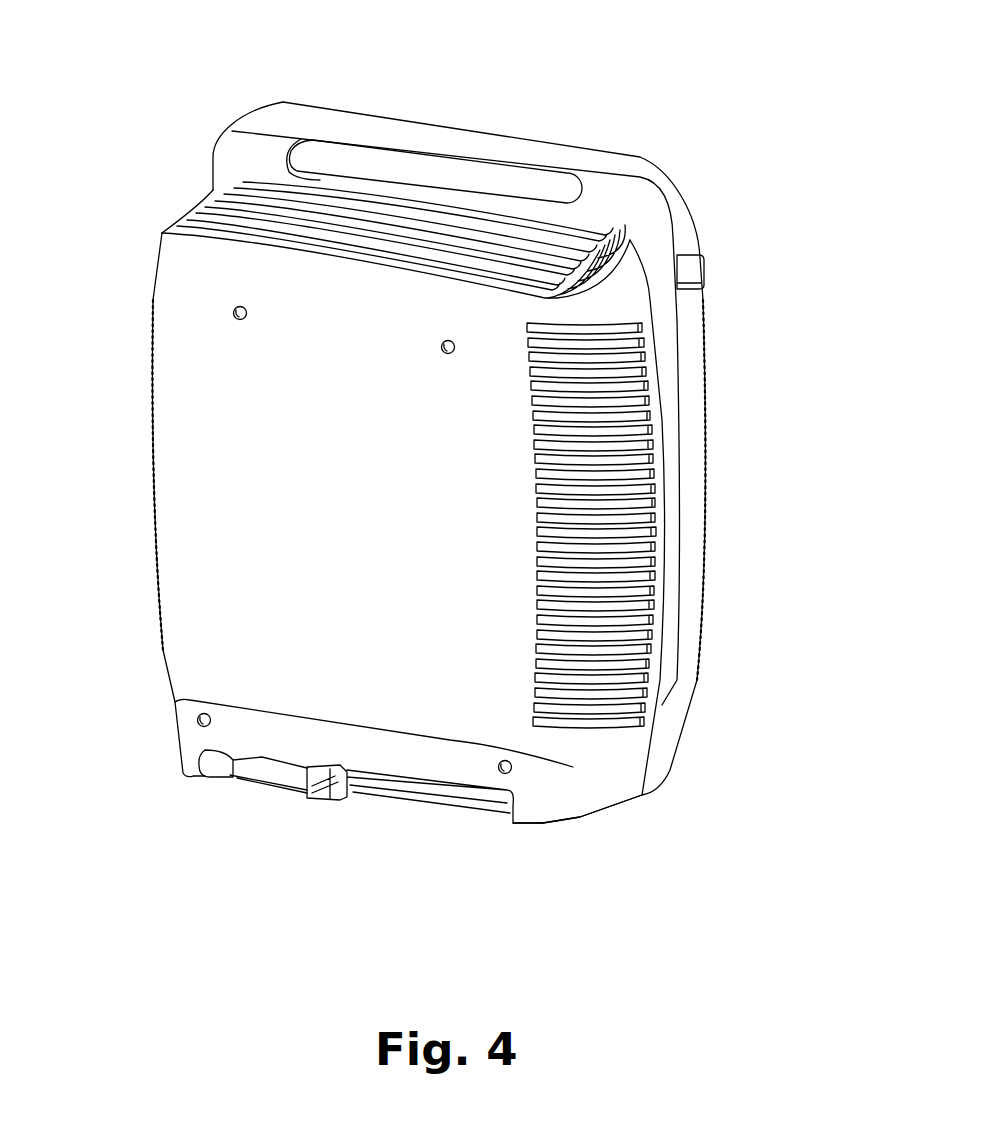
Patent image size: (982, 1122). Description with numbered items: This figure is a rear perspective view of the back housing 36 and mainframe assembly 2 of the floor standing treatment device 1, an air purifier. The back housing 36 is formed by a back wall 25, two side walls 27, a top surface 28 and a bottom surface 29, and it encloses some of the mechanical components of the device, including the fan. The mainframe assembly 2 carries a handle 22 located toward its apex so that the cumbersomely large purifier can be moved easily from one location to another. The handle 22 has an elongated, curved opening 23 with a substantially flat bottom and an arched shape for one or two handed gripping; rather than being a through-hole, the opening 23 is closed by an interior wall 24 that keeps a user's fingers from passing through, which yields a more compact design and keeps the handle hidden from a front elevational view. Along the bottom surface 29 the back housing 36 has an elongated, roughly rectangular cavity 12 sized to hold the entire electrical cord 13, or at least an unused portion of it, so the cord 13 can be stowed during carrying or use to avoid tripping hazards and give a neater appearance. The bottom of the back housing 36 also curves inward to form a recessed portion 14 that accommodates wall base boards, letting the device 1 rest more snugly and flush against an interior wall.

The floor standing treatment device 1 is at (778, 231).
The mainframe assembly 2 is at (716, 409).
The elongated cavity 12 is at (230, 774).
The electrical cord 13 is at (377, 796).
The recessed portion 14 is at (260, 735).
The handle 22 is at (480, 152).
The opening 23 is at (574, 197).
The interior wall 24 is at (437, 163).
The back wall 25 is at (415, 527).
The side walls 27 is at (150, 384).
The top surface 28 is at (607, 230).
The bottom surface 29 is at (524, 828).
The back housing 36 is at (197, 518).